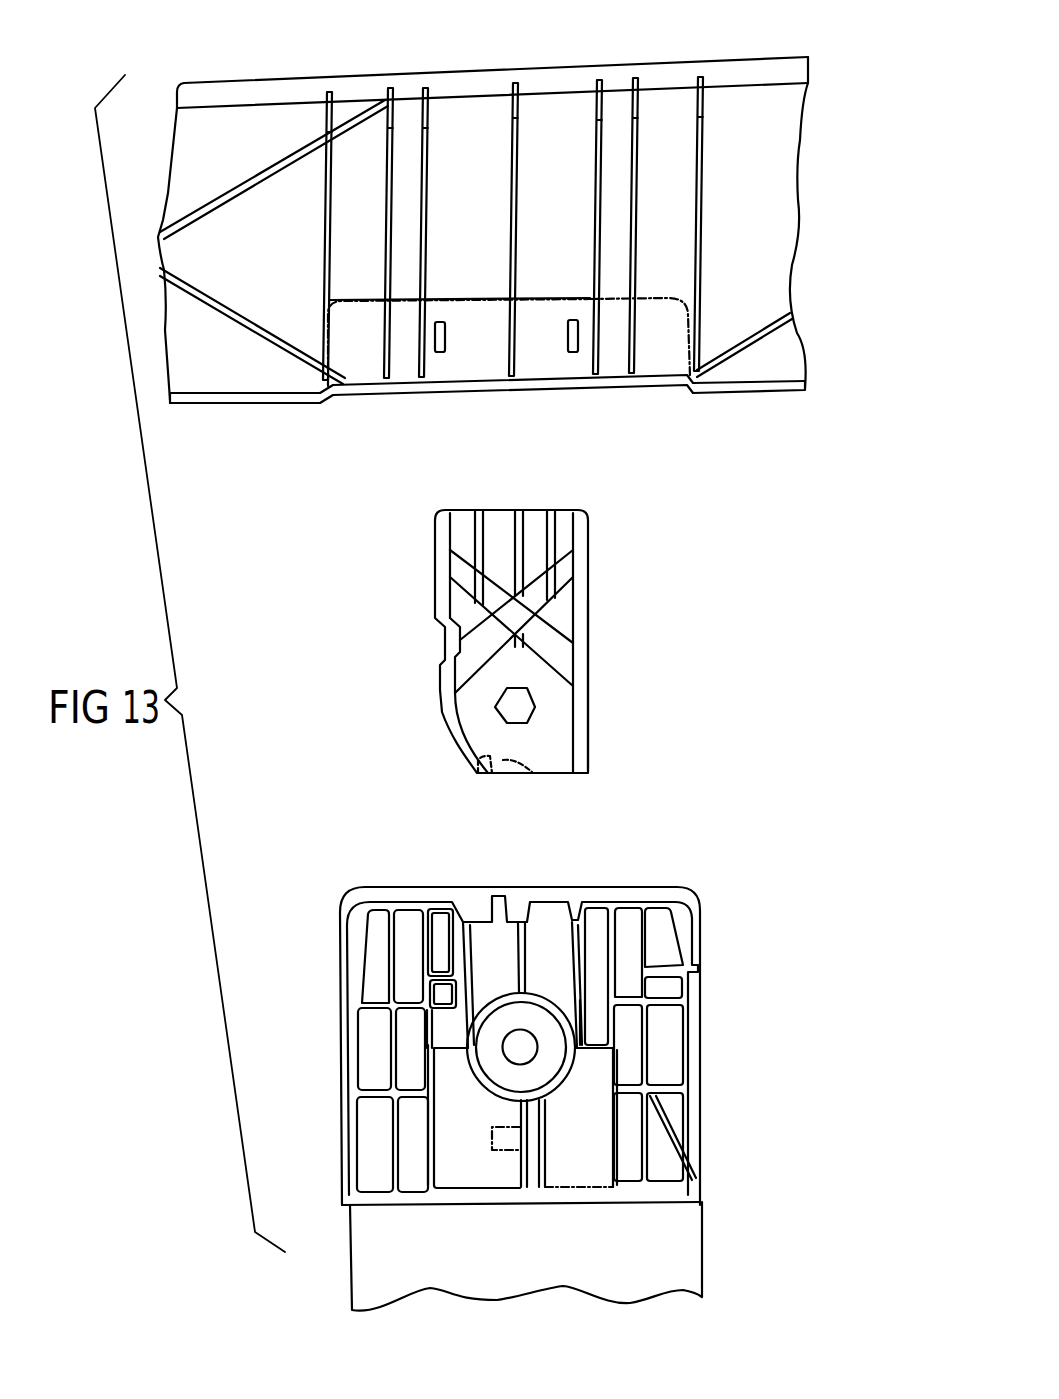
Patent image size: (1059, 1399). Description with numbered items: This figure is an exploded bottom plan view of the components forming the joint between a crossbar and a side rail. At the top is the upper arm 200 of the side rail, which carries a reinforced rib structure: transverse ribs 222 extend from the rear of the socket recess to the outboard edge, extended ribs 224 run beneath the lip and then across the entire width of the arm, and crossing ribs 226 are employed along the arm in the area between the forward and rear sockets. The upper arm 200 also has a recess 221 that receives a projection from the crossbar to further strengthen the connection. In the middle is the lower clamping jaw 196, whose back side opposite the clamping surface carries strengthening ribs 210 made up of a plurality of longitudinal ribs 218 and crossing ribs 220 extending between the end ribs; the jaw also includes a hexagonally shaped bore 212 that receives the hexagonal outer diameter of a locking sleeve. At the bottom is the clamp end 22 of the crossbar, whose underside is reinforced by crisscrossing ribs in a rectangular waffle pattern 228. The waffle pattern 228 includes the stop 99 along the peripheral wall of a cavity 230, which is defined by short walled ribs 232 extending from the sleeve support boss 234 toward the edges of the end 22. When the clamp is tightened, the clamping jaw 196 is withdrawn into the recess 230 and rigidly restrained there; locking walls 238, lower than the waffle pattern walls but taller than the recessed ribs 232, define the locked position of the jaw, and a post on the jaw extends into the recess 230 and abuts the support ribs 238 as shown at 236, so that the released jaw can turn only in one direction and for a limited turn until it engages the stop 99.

The upper arm 200 is at (780, 75).
The crossing ribs 226 is at (283, 157).
The transverse ribs 222 is at (513, 118).
The extended ribs 224 is at (600, 92).
The recess 221 is at (553, 267).
The strengthening ribs 210 is at (458, 505).
The longitudinal ribs 218 is at (530, 508).
The crossing ribs 220 is at (553, 577).
The hexagonally shaped bore 212 is at (520, 708).
The clamping jaw 196 is at (590, 748).
The post abutment location 236 is at (530, 770).
The clamp end 22 is at (702, 1072).
The stop 99 is at (435, 972).
The cavity 230 is at (607, 957).
The short walled ribs 232 is at (577, 1027).
The waffle pattern 228 is at (650, 1043).
The sleeve support boss 234 is at (558, 1086).
The locking walls 238 is at (527, 1170).